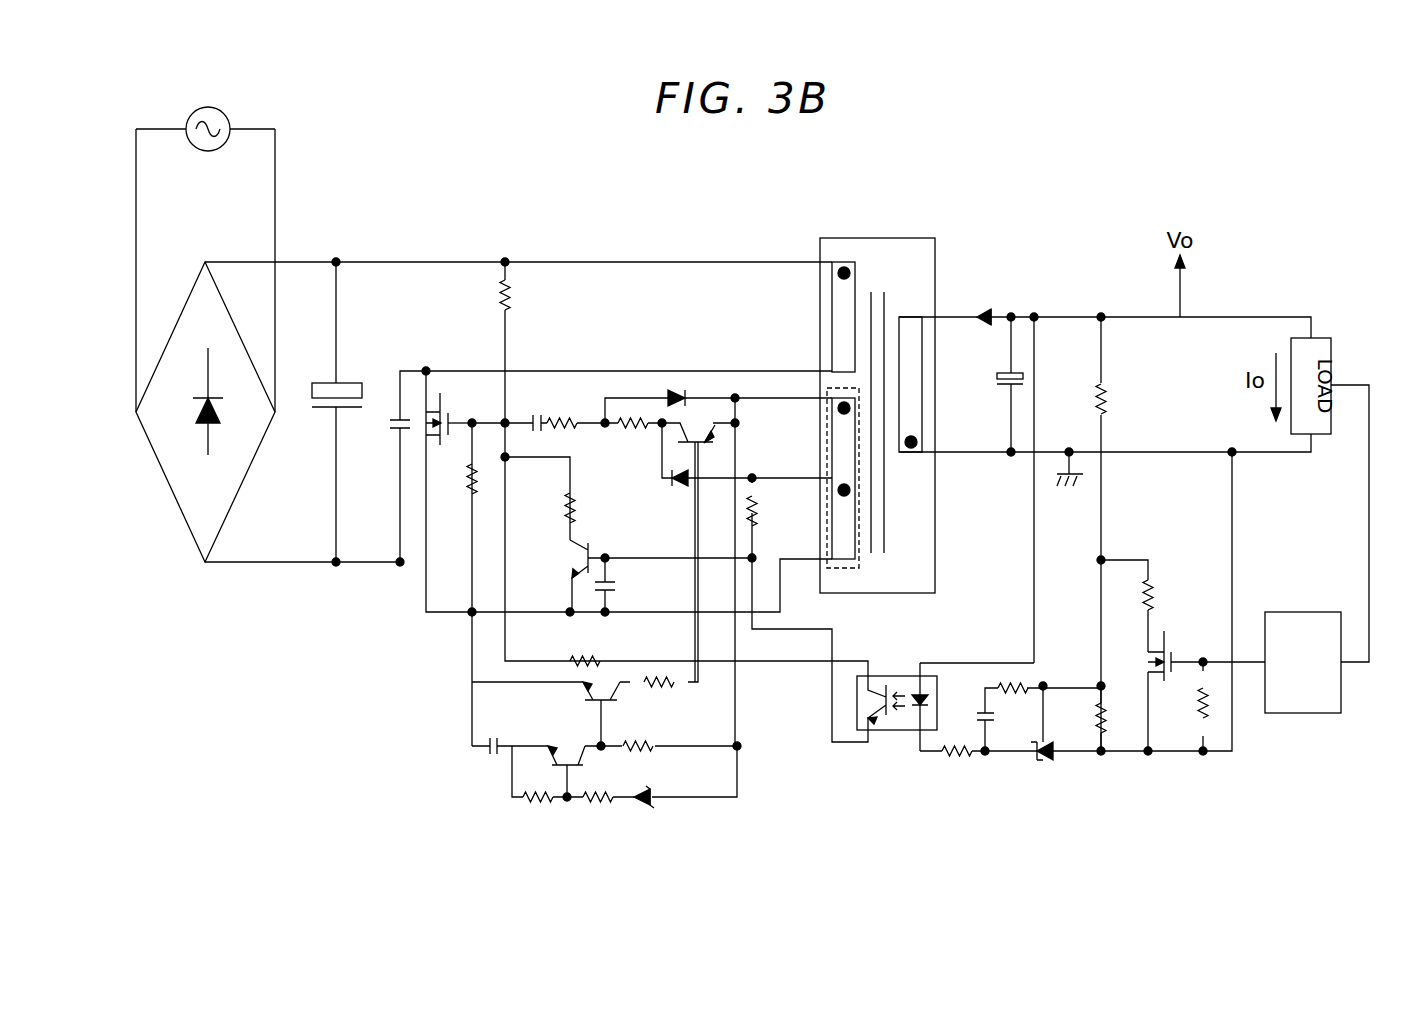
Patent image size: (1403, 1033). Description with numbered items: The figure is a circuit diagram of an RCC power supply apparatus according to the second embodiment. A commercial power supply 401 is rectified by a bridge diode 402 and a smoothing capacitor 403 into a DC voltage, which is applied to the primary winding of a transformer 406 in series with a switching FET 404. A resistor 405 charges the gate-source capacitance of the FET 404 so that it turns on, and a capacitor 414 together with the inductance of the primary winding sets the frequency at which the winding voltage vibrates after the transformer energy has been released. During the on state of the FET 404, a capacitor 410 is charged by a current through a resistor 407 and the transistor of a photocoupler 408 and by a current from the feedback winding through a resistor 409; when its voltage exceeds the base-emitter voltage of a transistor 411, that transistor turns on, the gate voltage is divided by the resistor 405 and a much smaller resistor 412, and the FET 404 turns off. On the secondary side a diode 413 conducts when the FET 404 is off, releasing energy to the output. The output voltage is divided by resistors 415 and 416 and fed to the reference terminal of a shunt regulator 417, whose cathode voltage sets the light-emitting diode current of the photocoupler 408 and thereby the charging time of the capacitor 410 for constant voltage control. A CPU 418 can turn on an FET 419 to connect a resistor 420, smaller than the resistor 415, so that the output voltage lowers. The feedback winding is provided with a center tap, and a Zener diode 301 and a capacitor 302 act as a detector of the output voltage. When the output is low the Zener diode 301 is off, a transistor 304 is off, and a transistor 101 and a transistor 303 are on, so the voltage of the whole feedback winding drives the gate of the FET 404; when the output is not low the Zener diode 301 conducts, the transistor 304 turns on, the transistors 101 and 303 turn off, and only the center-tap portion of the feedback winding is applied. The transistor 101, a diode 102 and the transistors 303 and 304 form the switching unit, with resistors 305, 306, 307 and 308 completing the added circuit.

The commercial power supply 401 is at (208, 114).
The bridge diode 402 is at (199, 412).
The smoothing capacitor 403 is at (326, 412).
The switching FET 404 is at (456, 415).
The resistor 405 is at (480, 342).
The transformer 406 is at (859, 400).
The resistor 407 is at (601, 649).
The photocoupler 408 is at (897, 698).
The resistor 409 is at (775, 518).
The capacitor 410 is at (627, 585).
The transistor 411 is at (568, 576).
The resistor 412 is at (545, 509).
The secondary-side diode 413 is at (990, 304).
The capacitor 414 is at (593, 466).
The resistor 415 is at (1123, 399).
The resistor 416 is at (1120, 718).
The shunt regulator 417 is at (1048, 731).
The CPU 418 is at (1303, 648).
The FET 419 is at (1179, 685).
The resistor 420 is at (1150, 606).
The transistor 101 is at (708, 572).
The diode 102 is at (670, 494).
The Zener diode 301 is at (656, 810).
The capacitor 302 is at (488, 762).
The transistor 303 is at (578, 714).
The transistor 304 is at (565, 742).
The resistor 305 is at (678, 696).
The resistor 306 is at (640, 732).
The resistor 307 is at (600, 813).
The resistor 308 is at (535, 813).